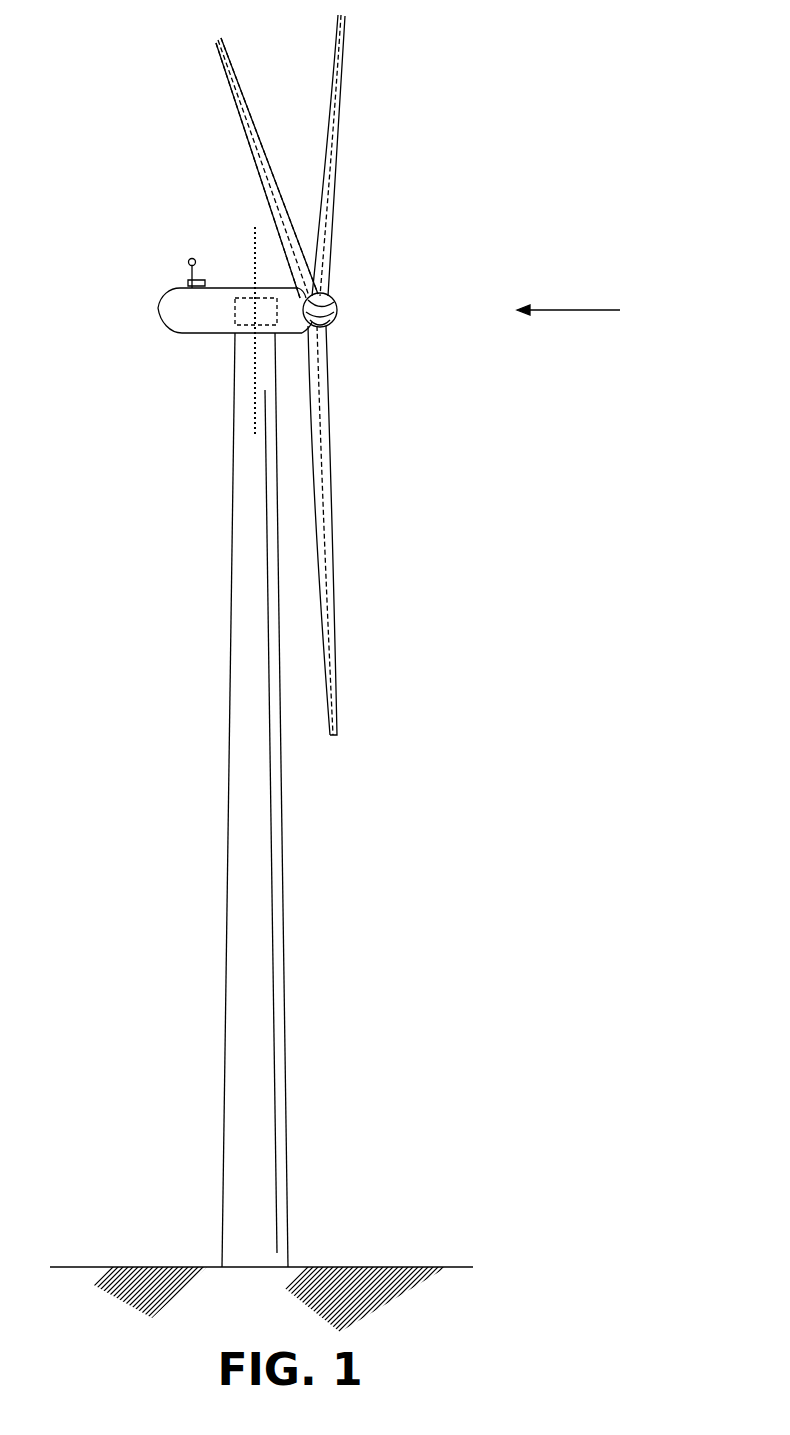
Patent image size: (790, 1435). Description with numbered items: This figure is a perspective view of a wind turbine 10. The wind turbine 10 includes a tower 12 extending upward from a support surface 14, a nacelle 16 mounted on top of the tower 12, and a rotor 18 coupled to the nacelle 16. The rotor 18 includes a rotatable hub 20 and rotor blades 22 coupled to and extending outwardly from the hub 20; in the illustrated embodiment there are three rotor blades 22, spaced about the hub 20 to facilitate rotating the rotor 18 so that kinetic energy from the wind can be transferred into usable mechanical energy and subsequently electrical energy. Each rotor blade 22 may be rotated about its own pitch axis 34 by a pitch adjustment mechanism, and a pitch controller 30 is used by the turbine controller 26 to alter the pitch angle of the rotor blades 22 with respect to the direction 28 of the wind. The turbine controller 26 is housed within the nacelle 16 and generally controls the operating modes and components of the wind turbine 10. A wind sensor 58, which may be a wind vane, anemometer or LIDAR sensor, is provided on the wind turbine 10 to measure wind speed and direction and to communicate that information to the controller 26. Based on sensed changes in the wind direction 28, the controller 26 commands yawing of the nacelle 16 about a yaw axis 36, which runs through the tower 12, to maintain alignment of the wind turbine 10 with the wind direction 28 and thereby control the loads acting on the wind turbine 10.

The wind turbine 10 is at (452, 104).
The tower 12 is at (238, 928).
The support surface 14 is at (137, 1265).
The nacelle 16 is at (207, 337).
The rotor 18 is at (348, 272).
The rotatable hub 20 is at (336, 298).
The rotor blade 22 is at (327, 145).
The turbine controller 26 is at (241, 296).
The wind direction 28 is at (560, 310).
The pitch controller 30 is at (338, 306).
The pitch axis 34 is at (258, 160).
The yaw axis 36 is at (252, 380).
The wind sensor 58 is at (187, 282).